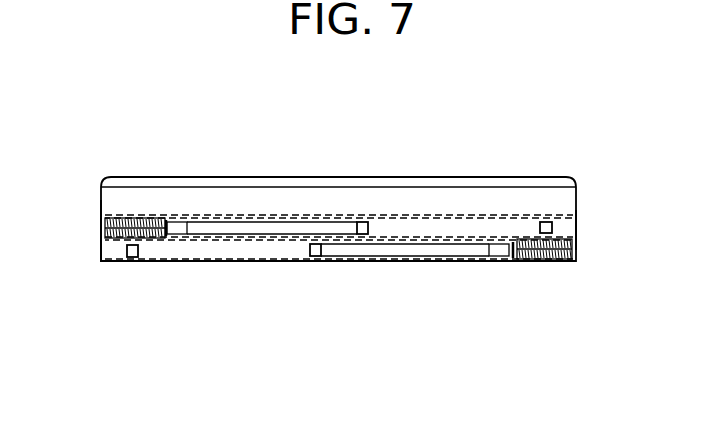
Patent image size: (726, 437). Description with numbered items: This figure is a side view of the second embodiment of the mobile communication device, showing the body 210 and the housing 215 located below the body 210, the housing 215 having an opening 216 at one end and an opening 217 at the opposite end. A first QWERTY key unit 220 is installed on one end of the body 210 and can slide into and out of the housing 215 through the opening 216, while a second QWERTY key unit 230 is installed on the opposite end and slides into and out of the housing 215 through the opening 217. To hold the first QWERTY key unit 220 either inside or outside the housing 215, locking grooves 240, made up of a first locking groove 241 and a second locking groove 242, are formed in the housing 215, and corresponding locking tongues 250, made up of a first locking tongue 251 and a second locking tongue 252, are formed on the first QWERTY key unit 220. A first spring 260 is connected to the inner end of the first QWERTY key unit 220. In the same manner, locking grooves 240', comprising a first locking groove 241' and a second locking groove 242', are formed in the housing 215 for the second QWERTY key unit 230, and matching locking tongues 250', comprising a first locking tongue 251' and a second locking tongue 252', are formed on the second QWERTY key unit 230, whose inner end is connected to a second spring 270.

The body 210 is at (573, 198).
The housing 215 is at (92, 218).
The opening 216 is at (570, 225).
The opening 217 is at (104, 240).
The first QWERTY key unit 220 is at (561, 224).
The second QWERTY key unit 230 is at (108, 242).
The locking grooves 240 is at (339, 157).
The first locking groove 241 is at (339, 174).
The second locking groove 242 is at (547, 171).
The locking tongues 250 is at (266, 161).
The first locking tongue 251 is at (181, 178).
The second locking tongue 252 is at (352, 175).
The first spring 260 is at (120, 225).
The second spring 270 is at (543, 259).
The locking grooves 240' is at (339, 305).
The first locking groove 241' is at (339, 288).
The second locking groove 242' is at (150, 289).
The locking tongues 250' is at (409, 305).
The first locking tongue 251' is at (498, 288).
The second locking tongue 252' is at (320, 289).